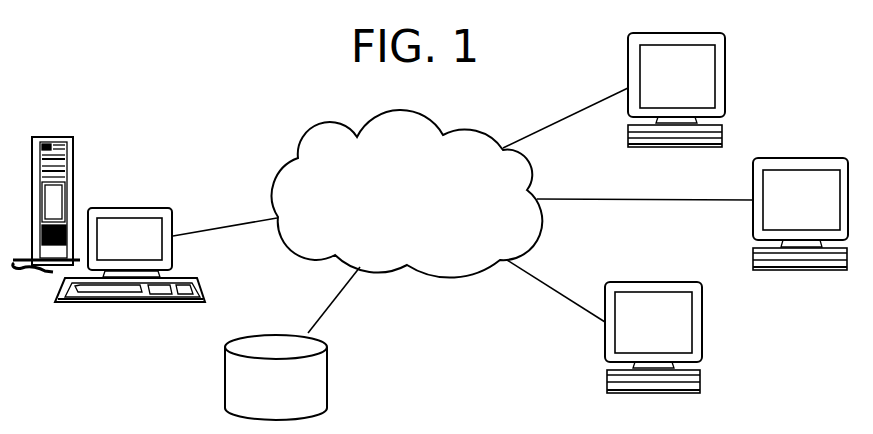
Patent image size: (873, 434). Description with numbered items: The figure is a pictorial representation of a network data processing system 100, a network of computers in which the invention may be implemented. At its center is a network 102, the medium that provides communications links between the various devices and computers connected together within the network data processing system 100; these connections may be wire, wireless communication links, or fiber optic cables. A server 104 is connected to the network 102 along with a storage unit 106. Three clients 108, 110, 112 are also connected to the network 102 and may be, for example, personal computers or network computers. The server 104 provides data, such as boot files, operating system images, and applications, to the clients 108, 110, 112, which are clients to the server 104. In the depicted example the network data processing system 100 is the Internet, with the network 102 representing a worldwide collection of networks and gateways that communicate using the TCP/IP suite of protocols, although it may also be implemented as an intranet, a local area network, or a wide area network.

The network data processing system 100 is at (433, 98).
The network 102 is at (385, 190).
The server 104 is at (77, 172).
The storage unit 106 is at (238, 335).
The client 108 is at (633, 33).
The client 110 is at (763, 158).
The client 112 is at (610, 282).